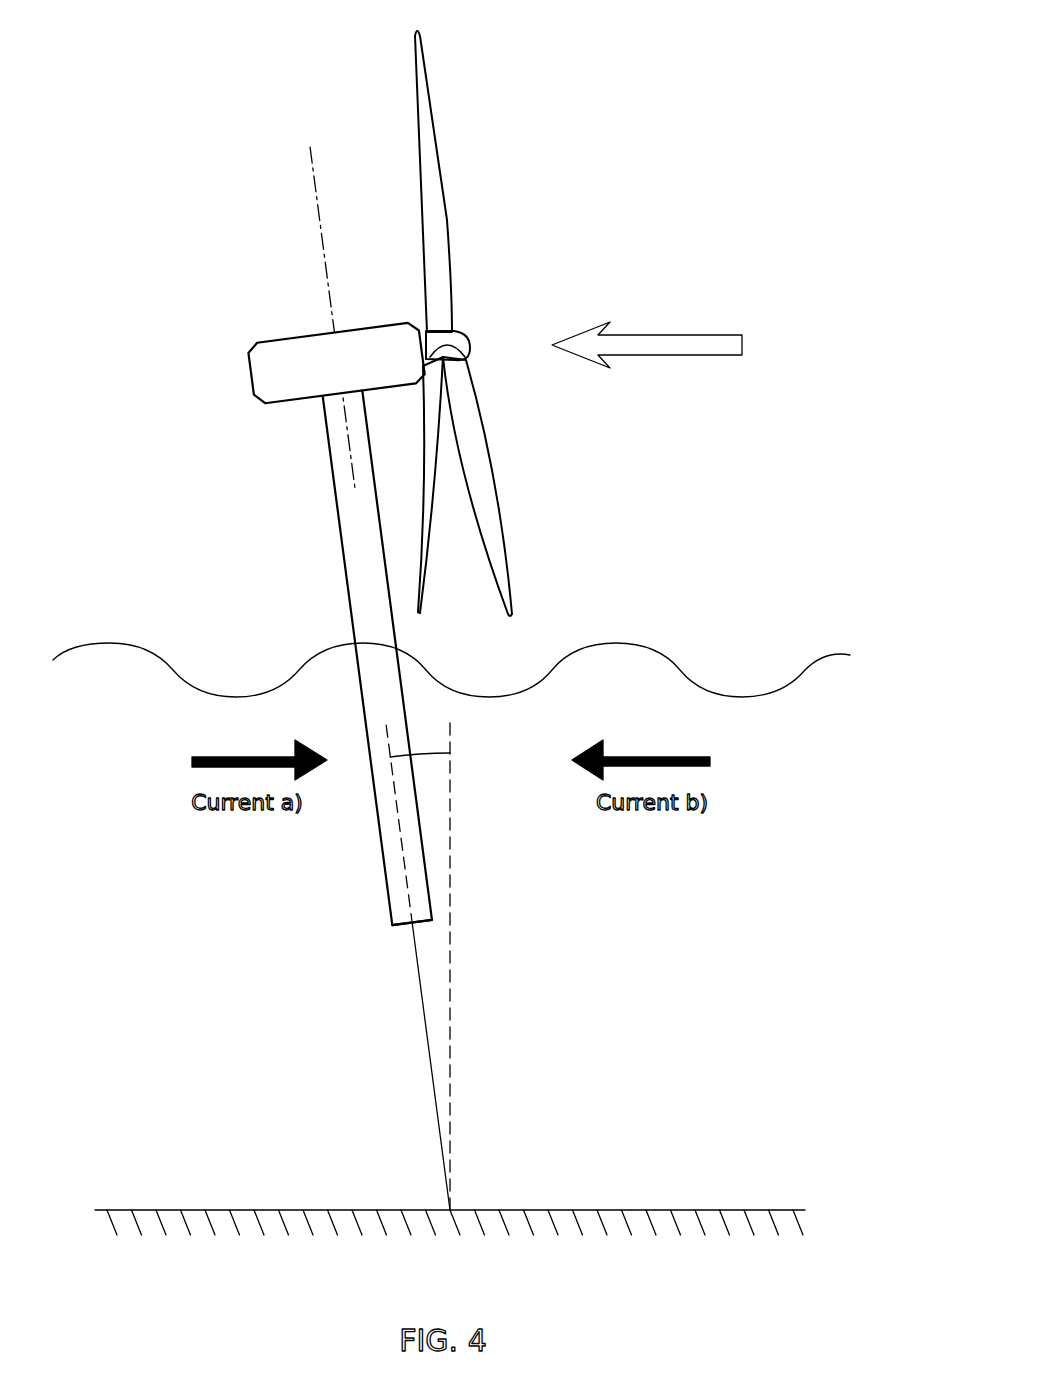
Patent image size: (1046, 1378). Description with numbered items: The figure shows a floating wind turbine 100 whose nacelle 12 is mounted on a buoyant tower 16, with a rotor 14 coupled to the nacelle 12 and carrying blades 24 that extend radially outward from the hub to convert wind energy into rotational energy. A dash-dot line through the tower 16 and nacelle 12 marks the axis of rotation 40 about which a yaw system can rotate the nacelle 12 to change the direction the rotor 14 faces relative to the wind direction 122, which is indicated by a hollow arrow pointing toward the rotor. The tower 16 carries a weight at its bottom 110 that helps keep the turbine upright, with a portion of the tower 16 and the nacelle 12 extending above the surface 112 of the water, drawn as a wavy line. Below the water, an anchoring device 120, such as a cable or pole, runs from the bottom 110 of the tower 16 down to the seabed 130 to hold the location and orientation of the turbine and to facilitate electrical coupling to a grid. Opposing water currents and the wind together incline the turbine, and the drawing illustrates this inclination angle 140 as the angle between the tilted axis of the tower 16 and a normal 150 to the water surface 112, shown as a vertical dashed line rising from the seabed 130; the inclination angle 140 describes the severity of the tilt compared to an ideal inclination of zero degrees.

The floating wind turbine system 100 is at (716, 62).
The nacelle 12 is at (277, 407).
The rotor 14 is at (472, 326).
The tower 16 is at (342, 558).
The blades 24 is at (430, 78).
The axis of rotation 40 is at (313, 162).
The bottom of tower 110 is at (388, 898).
The surface of the water 112 is at (665, 668).
The anchoring device 120 is at (428, 1048).
The wind direction 122 is at (723, 335).
The seabed 130 is at (743, 1210).
The inclination angle 140 is at (427, 753).
The normal to surface 150 is at (451, 1097).